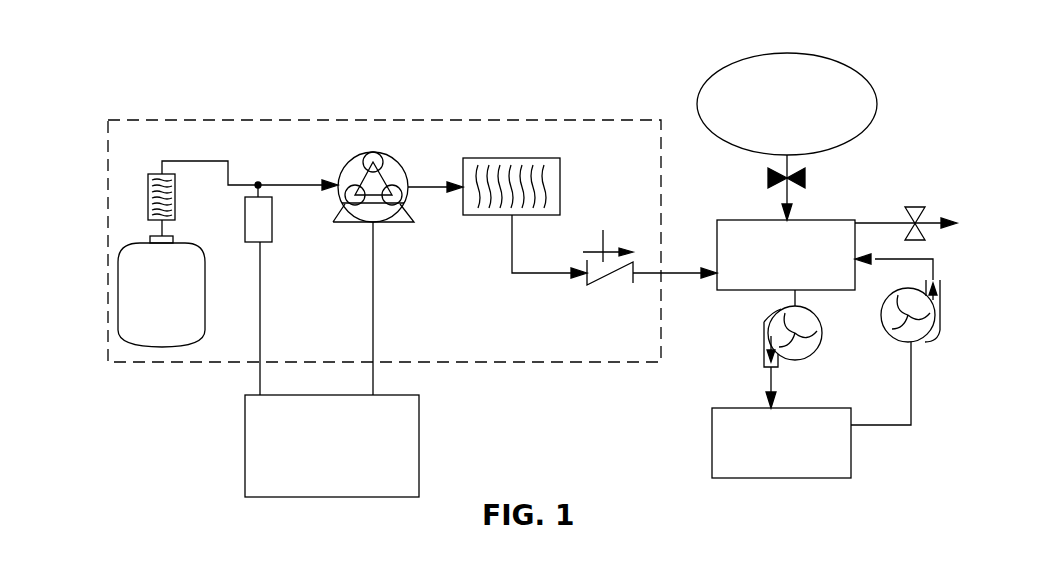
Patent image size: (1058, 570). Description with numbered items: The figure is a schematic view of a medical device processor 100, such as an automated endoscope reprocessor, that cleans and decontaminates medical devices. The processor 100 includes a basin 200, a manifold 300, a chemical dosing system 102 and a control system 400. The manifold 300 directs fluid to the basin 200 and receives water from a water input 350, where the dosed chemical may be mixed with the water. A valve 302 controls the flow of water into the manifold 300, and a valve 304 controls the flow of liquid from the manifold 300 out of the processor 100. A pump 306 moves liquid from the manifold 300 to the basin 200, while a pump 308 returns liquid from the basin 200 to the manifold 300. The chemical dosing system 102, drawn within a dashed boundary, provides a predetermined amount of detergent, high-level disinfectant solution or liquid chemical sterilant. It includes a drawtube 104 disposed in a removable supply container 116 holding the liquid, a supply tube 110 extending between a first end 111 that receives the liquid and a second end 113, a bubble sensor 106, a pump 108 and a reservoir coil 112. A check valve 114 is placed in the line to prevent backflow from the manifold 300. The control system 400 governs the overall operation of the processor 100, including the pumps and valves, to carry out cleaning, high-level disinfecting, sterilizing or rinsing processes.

The medical device processor 100 is at (733, 46).
The chemical dosing system 102 is at (107, 156).
The drawtube 104 is at (129, 309).
The bubble sensor 106 is at (272, 222).
The pump 108 is at (355, 163).
The supply tube 110 is at (216, 142).
The first end 111 is at (138, 172).
The reservoir coil 112 is at (527, 158).
The second end 113 is at (577, 310).
The check valve 114 is at (603, 232).
The removable supply container 116 is at (147, 327).
The basin 200 is at (781, 443).
The manifold 300 is at (786, 255).
The valve 302 is at (768, 177).
The valve 304 is at (916, 203).
The pump 306 is at (772, 316).
The pump 308 is at (926, 340).
The water input 350 is at (787, 104).
The control system 400 is at (332, 446).